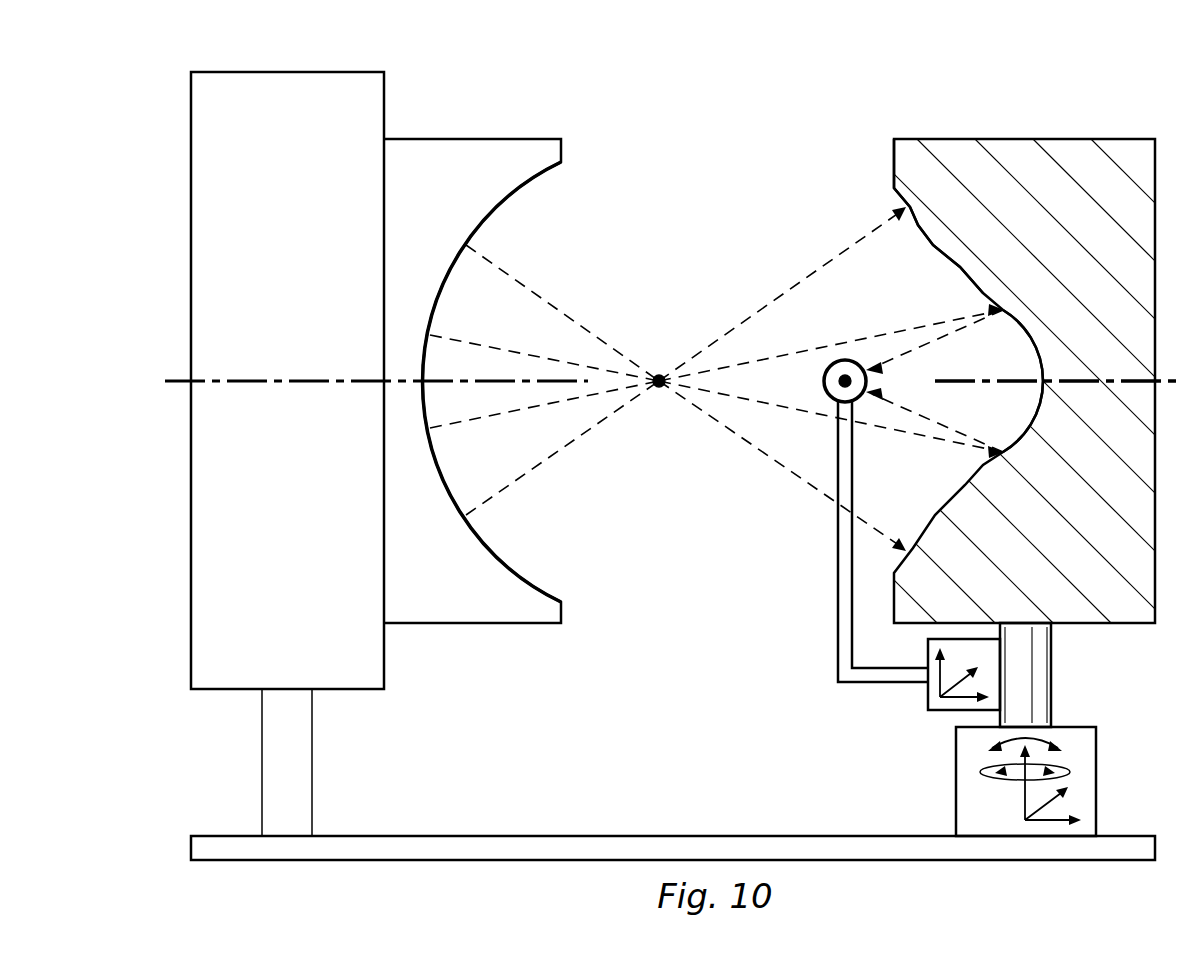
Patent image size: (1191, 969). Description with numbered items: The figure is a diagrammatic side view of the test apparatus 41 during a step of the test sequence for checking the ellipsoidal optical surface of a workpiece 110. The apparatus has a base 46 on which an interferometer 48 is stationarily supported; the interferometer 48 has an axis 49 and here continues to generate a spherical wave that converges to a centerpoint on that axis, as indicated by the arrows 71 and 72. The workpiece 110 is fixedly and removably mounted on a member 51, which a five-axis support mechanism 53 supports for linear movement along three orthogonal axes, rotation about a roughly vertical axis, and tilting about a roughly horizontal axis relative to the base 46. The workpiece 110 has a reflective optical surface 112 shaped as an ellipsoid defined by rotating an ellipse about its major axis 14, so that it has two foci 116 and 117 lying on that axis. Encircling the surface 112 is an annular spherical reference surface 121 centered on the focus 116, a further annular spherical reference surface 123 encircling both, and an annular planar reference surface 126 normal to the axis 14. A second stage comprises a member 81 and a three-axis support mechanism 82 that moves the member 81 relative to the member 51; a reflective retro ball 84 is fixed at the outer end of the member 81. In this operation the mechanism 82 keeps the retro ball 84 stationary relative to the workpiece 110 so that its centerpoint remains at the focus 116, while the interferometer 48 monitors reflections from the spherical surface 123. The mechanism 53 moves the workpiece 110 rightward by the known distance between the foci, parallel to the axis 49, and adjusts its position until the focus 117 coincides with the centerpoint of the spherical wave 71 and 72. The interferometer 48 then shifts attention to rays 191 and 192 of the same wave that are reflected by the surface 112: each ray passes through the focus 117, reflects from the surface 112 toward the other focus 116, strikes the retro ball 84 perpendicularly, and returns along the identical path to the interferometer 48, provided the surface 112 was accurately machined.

The test apparatus 41 is at (666, 97).
The base 46 is at (527, 835).
The interferometer 48 is at (285, 72).
The axis 49 is at (292, 381).
The member 51 is at (1051, 672).
The 5-axis support mechanism 53 is at (1096, 782).
The arrow 71 is at (550, 302).
The arrow 72 is at (550, 458).
The member 81 is at (838, 602).
The 3-axis support mechanism 82 is at (948, 712).
The reflective spherical ball 84 is at (848, 358).
The workpiece 110 is at (1083, 138).
The reflective optical surface 112 is at (1033, 342).
The focus 116 is at (830, 374).
The focus 117 is at (659, 374).
The annular reflective optical surface 121 is at (960, 268).
The annular reflective optical surface 123 is at (922, 228).
The annular reflective planar surface 126 is at (893, 160).
The major axis 14 is at (1008, 384).
The ray 191 is at (468, 337).
The ray 192 is at (468, 424).